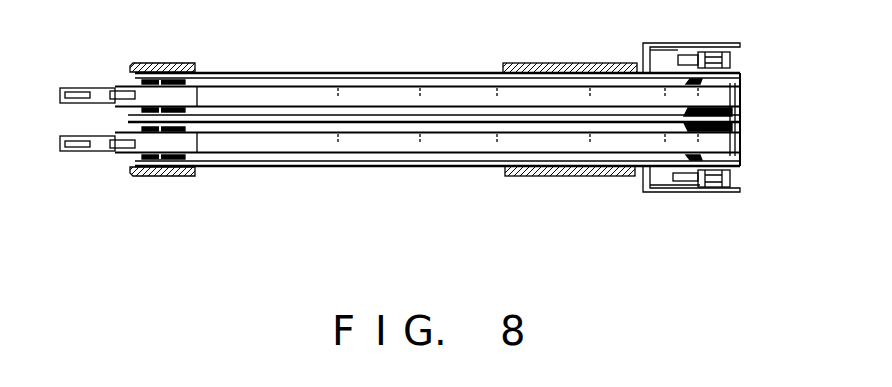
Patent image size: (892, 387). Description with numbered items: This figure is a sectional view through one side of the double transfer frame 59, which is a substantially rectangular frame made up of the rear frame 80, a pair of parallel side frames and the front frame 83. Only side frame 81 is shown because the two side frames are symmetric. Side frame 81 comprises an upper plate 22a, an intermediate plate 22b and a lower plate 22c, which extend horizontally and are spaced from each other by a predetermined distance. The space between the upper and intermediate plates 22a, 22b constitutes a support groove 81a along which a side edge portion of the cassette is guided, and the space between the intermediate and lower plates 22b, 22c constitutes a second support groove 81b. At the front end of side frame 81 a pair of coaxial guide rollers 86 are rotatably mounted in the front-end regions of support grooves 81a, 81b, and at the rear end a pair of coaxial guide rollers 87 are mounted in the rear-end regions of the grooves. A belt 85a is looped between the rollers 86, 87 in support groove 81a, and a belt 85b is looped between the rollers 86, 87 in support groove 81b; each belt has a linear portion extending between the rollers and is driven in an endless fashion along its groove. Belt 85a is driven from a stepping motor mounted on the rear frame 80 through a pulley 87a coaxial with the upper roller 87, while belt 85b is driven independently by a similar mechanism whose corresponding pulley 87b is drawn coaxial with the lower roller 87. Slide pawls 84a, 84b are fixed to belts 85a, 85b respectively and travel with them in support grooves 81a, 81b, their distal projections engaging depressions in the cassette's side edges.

The double transfer frame 59 is at (543, 58).
The rear frame 80 is at (580, 63).
The side frame 81 is at (345, 73).
The support groove 81a is at (452, 77).
The support groove 81b is at (310, 152).
The upper plate 22a is at (388, 73).
The intermediate plate 22b is at (362, 122).
The lower plate 22c is at (460, 167).
The front frame 83 is at (143, 63).
The slide pawl 84a is at (84, 87).
The slide pawl 84b is at (100, 152).
The belt 85a is at (270, 88).
The belt 85b is at (407, 150).
The guide roller 86 is at (178, 65).
The guide roller 87 is at (695, 82).
The pulley 87a is at (720, 50).
The lower roller bracket 87b is at (720, 188).